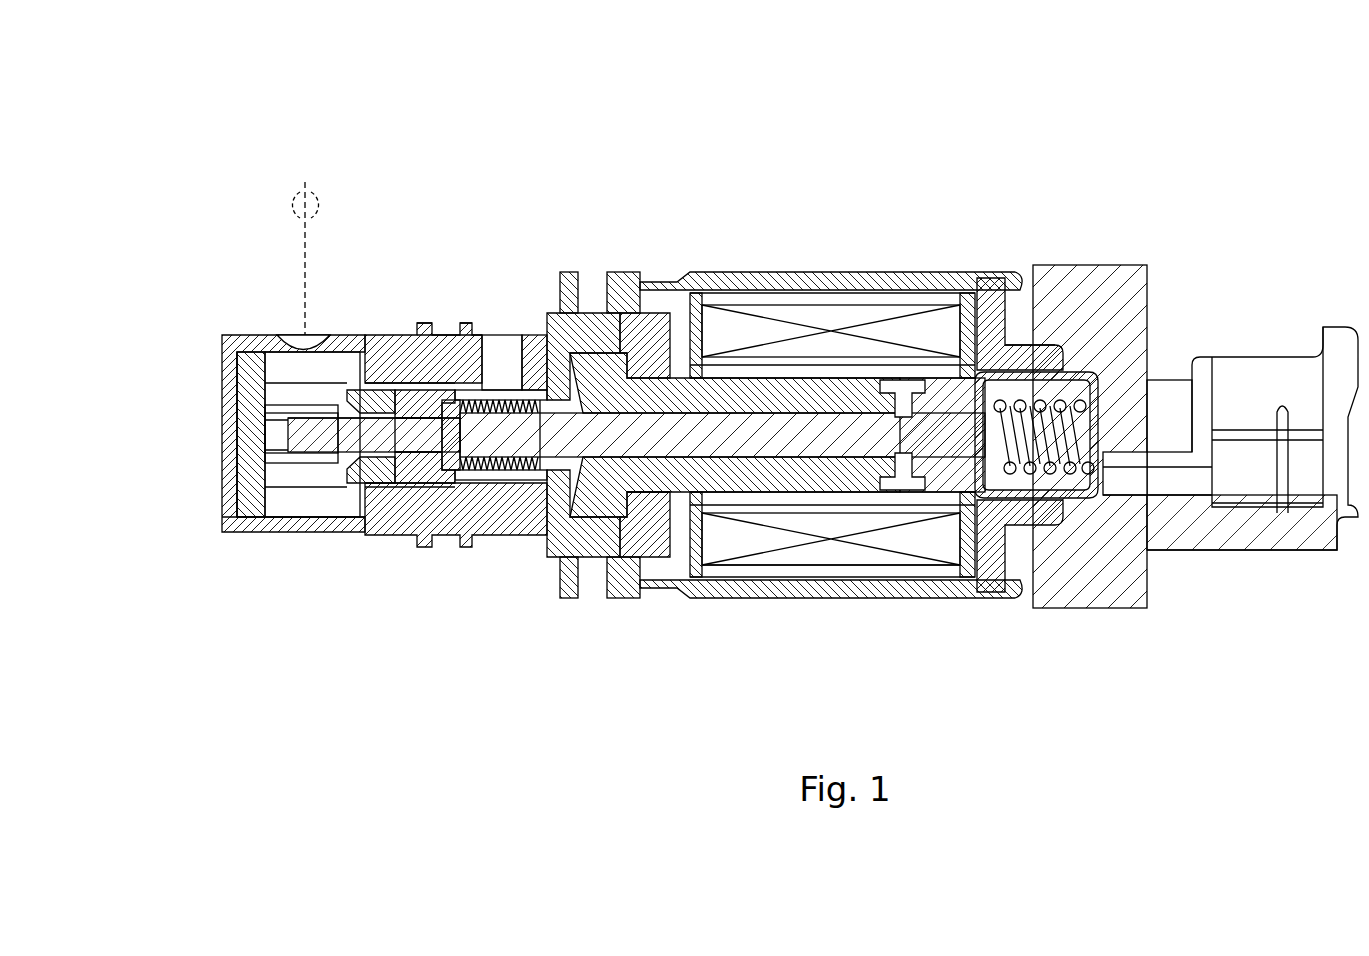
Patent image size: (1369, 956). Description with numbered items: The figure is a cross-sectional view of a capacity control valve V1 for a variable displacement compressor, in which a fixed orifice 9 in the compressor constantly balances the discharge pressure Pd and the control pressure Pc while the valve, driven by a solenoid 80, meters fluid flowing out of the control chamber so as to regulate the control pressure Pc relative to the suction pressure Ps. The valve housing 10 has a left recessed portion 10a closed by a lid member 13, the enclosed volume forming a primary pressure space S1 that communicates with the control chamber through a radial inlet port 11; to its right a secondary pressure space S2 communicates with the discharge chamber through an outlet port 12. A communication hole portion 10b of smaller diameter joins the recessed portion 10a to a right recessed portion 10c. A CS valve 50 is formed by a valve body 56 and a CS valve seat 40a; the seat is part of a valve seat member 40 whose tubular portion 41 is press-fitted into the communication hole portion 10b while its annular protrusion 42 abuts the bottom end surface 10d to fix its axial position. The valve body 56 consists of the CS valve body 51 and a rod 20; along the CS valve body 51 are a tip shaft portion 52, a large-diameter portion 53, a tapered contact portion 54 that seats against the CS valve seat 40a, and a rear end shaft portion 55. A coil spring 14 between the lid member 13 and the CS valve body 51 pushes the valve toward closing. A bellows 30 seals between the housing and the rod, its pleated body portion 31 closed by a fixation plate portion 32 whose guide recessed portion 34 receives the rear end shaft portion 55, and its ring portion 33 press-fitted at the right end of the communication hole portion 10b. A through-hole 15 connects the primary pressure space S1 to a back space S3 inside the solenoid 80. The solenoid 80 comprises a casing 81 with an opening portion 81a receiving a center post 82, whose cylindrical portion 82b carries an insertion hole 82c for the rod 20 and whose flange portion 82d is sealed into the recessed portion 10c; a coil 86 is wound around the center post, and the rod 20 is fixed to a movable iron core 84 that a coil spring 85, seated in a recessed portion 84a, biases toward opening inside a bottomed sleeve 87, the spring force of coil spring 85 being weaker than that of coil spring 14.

The capacity control valve V1 is at (1227, 142).
The fixed orifice 9 is at (291, 207).
The discharge pressure Pd is at (305, 244).
The control pressure Pc is at (305, 245).
The suction pressure Ps is at (504, 346).
The valve housing 10 is at (268, 550).
The recessed portion 10a is at (293, 535).
The communication hole portion 10b is at (466, 335).
The recessed portion 10c is at (645, 330).
The bottom end surface 10d is at (358, 537).
The inlet port 11 is at (285, 345).
The outlet port 12 is at (511, 333).
The lid member 13 is at (237, 440).
The coil spring 14 is at (240, 380).
The through-hole 15 is at (455, 472).
The rod 20 is at (745, 475).
The bellows 30 is at (502, 482).
The body portion 31 is at (535, 480).
The fixation plate portion 32 is at (470, 470).
The ring portion 33 is at (580, 290).
The guide recessed portion 34 is at (460, 398).
The valve seat member 40 is at (364, 381).
The CS valve seat 40a is at (262, 452).
The tubular portion 41 is at (397, 395).
The annular protrusion 42 is at (350, 400).
The CS valve 50 is at (97, 462).
The CS valve body 51 is at (395, 480).
The tip shaft portion 52 is at (248, 410).
The large-diameter portion 53 is at (293, 335).
The contact portion 54 is at (262, 490).
The rear end shaft portion 55 is at (386, 490).
The valve body 56 is at (752, 712).
The solenoid 80 is at (949, 220).
The casing 81 is at (592, 292).
The opening portion 81a is at (645, 495).
The center post 82 is at (750, 350).
The cylindrical portion 82b is at (822, 378).
The insertion hole 82c is at (803, 560).
The flange portion 82d is at (592, 505).
The movable iron core 84 is at (1003, 575).
The recessed portion 84a is at (1042, 345).
The coil spring 85 is at (1133, 290).
The coil 86 is at (845, 580).
The sleeve 87 is at (1080, 500).
The primary pressure space S1 is at (235, 540).
The secondary pressure space S2 is at (405, 392).
The back space S3 is at (915, 540).